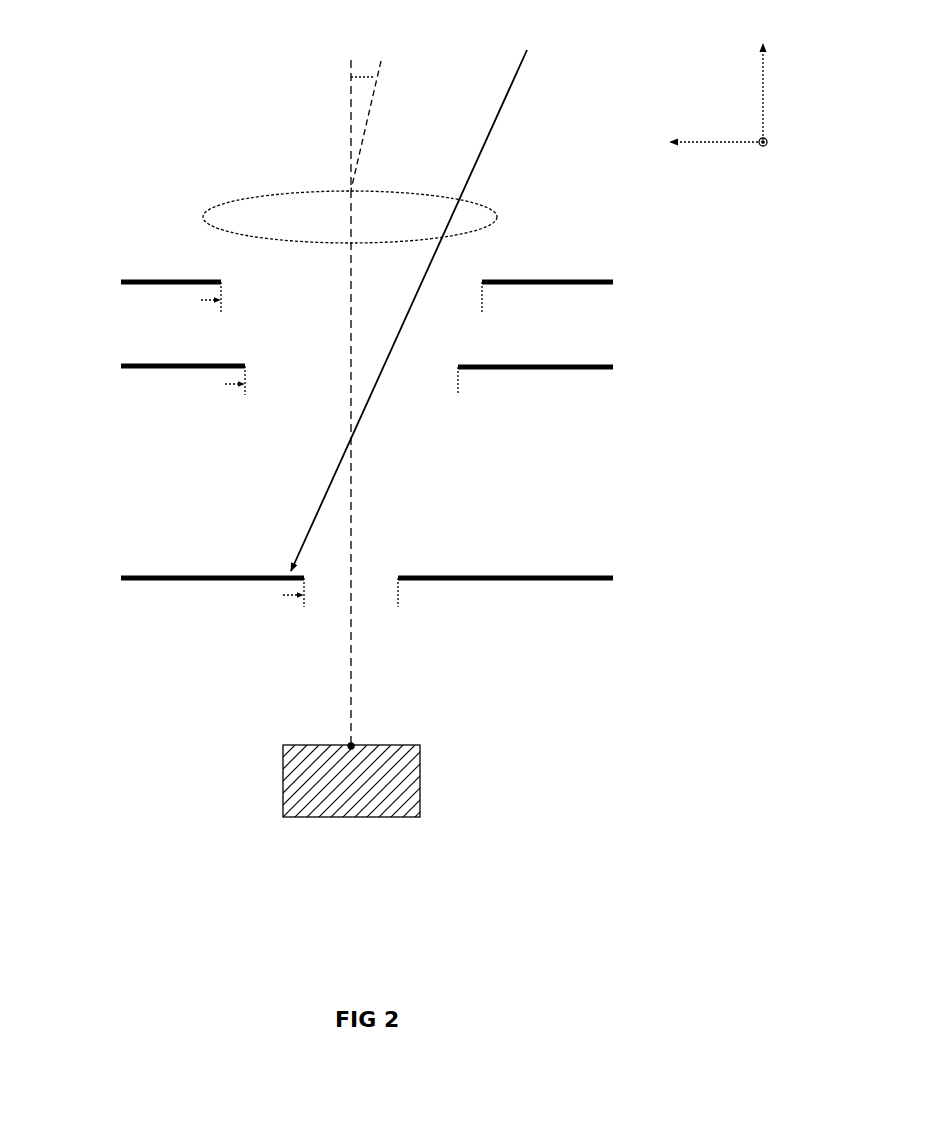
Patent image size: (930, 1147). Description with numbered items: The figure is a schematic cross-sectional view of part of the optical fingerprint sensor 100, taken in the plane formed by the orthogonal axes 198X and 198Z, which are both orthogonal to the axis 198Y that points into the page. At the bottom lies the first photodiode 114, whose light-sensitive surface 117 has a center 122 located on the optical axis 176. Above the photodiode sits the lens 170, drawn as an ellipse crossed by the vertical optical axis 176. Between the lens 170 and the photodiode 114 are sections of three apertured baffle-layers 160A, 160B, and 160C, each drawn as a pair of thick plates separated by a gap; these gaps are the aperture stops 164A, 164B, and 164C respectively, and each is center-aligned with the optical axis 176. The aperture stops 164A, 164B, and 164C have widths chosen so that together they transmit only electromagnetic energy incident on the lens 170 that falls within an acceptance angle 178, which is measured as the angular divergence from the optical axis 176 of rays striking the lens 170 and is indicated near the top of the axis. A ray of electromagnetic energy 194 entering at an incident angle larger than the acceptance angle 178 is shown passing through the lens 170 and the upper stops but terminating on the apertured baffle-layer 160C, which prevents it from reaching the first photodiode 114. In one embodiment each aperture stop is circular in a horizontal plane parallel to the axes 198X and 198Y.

The optical fingerprint sensor 100 is at (130, 104).
The first photodiode 114 is at (348, 808).
The light-sensitive surface 117 is at (298, 738).
The center of the light-sensitive surface 122 is at (353, 748).
The apertured baffle-layer 160A is at (127, 280).
The apertured baffle-layer 160B is at (125, 368).
The apertured baffle-layer 160C is at (127, 577).
The aperture stop 164A is at (484, 301).
The aperture stop 164B is at (460, 384).
The aperture stop 164C is at (400, 595).
The lens 170 is at (248, 200).
The optical axis 176 is at (353, 511).
The acceptance angle 178 is at (370, 68).
The ray of electromagnetic energy 194 is at (519, 78).
The axis 198X is at (714, 141).
The axis 198Y is at (758, 138).
The axis 198Z is at (767, 92).